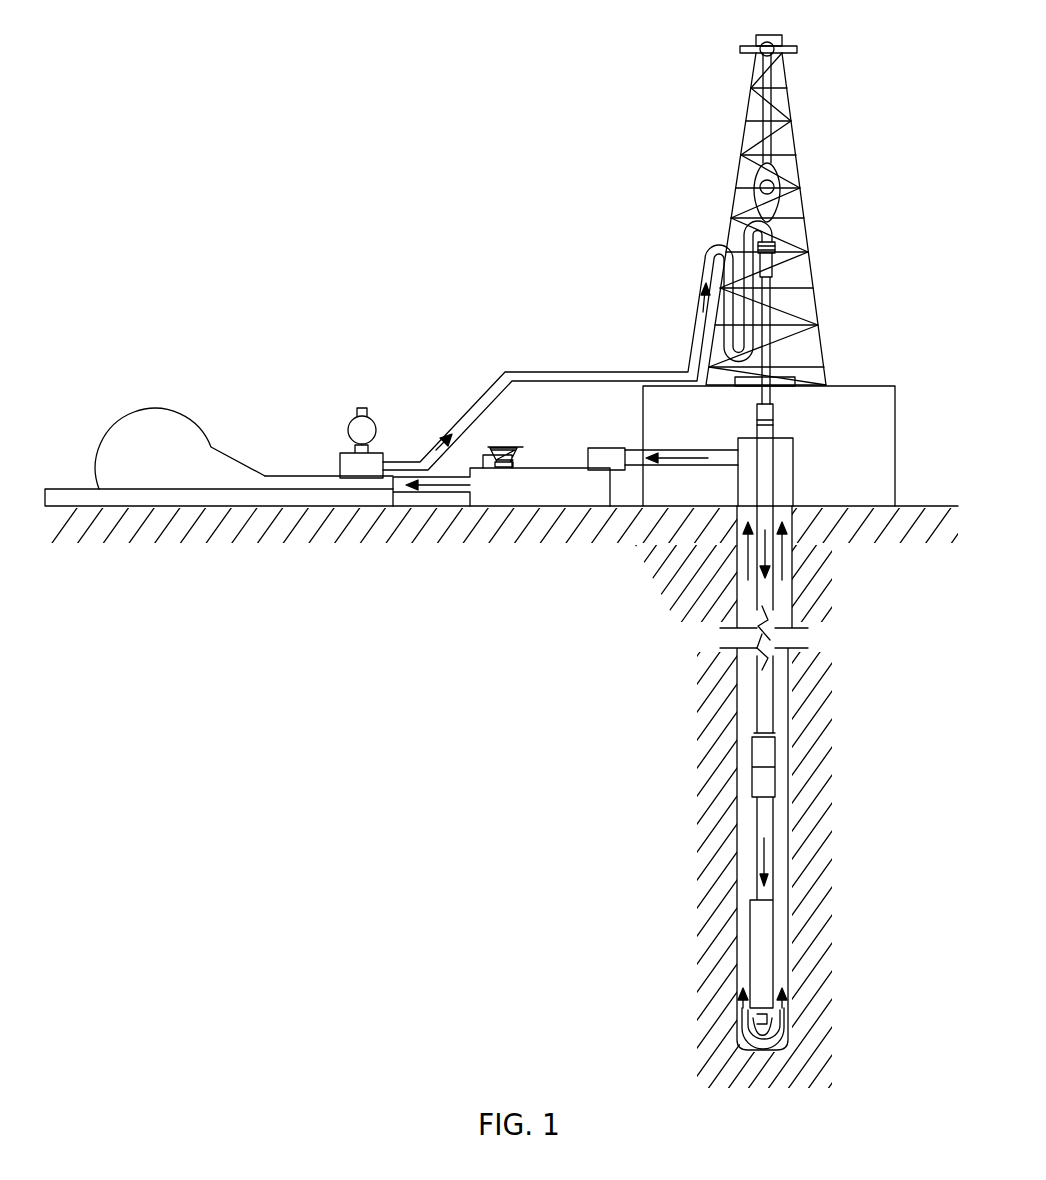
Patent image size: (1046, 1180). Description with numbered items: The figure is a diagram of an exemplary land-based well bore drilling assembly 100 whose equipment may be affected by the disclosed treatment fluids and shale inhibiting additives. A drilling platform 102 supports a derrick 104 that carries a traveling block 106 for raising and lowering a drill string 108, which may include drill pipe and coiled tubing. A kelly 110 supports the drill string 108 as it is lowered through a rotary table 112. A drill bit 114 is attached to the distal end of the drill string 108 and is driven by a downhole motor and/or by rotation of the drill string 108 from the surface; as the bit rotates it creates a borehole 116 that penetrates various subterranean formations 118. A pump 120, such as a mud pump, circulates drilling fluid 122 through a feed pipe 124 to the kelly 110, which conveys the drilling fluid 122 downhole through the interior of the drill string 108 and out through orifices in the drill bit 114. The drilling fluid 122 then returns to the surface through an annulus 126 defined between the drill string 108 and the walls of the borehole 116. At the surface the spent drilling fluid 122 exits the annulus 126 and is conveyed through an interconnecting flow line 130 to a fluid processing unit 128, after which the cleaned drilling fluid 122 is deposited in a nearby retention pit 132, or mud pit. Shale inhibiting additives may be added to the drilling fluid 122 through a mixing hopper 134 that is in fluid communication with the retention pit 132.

The well bore drilling assembly 100 is at (470, 112).
The drilling platform 102 is at (897, 393).
The derrick 104 is at (797, 133).
The traveling block 106 is at (782, 174).
The drill string 108 is at (768, 607).
The kelly 110 is at (768, 298).
The rotary table 112 is at (795, 382).
The drill bit 114 is at (790, 1024).
The borehole 116 is at (797, 693).
The subterranean formations 118 is at (623, 730).
The pump 120 is at (170, 467).
The drilling fluid 122 is at (408, 465).
The feed pipe 124 is at (522, 373).
The annulus 126 is at (780, 852).
The fluid processing unit 128 is at (602, 452).
The interconnecting flow line 130 is at (723, 463).
The retention pit 132 is at (583, 496).
The mixing hopper 134 is at (486, 480).